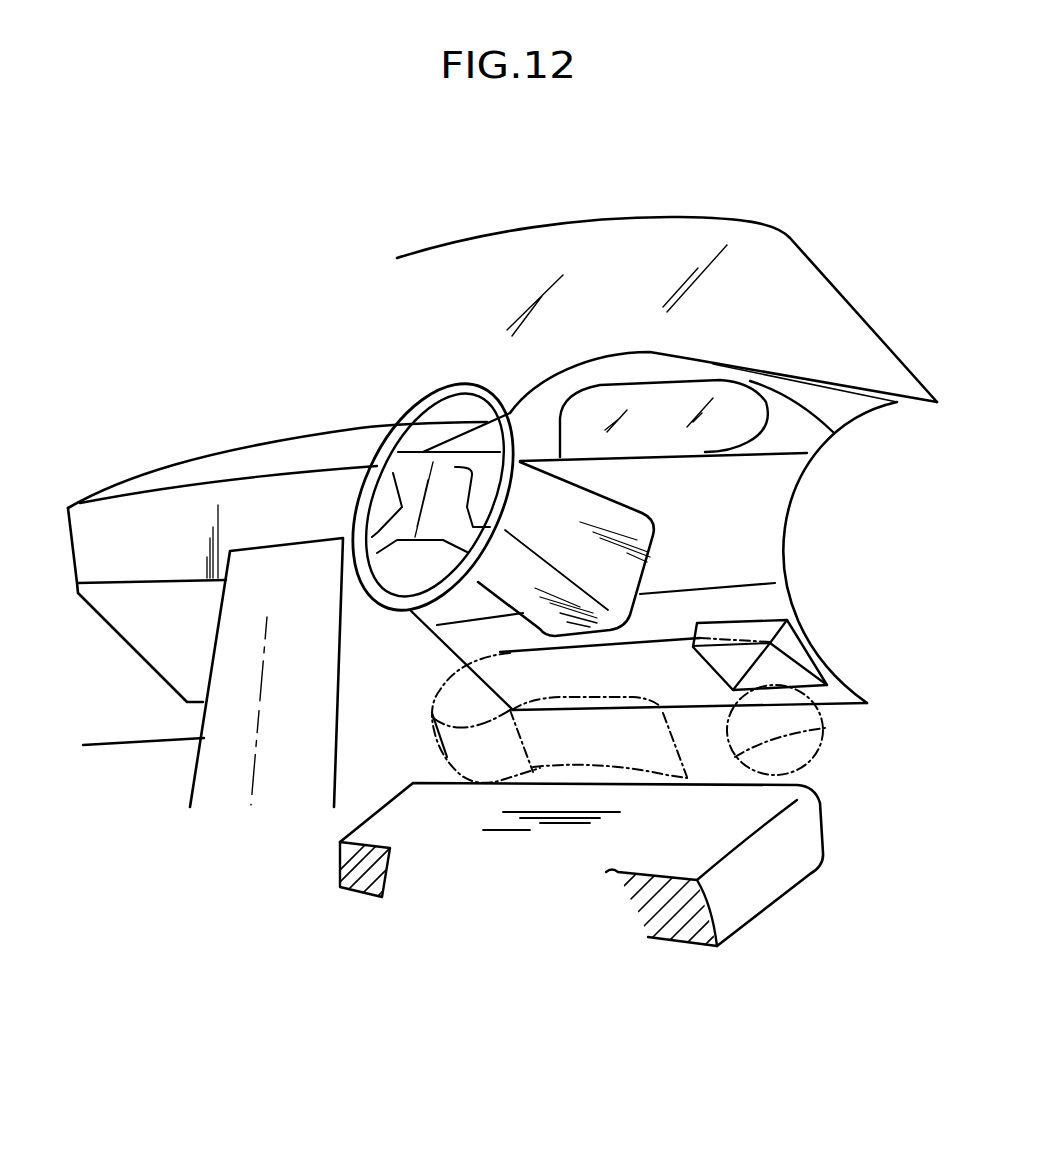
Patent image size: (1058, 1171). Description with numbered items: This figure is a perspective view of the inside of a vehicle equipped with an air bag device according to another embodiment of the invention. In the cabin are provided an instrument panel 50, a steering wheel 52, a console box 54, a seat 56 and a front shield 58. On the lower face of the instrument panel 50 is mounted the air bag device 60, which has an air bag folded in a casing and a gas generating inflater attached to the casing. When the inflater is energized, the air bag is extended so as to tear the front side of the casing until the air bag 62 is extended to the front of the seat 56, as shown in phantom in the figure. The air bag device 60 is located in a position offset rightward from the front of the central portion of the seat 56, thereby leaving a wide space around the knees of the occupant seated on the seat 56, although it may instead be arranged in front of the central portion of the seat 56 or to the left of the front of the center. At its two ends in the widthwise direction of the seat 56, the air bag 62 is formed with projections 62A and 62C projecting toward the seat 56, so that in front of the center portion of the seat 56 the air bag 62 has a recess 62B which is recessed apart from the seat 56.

The instrument panel 50 is at (767, 517).
The steering wheel 52 is at (443, 388).
The console box 54 is at (222, 660).
The seat 56 is at (792, 880).
The front shield 58 is at (829, 298).
The air bag device 60 is at (806, 636).
The air bag 62 is at (623, 727).
The projection 62A is at (825, 728).
The recess 62B is at (573, 697).
The projection 62C is at (448, 746).